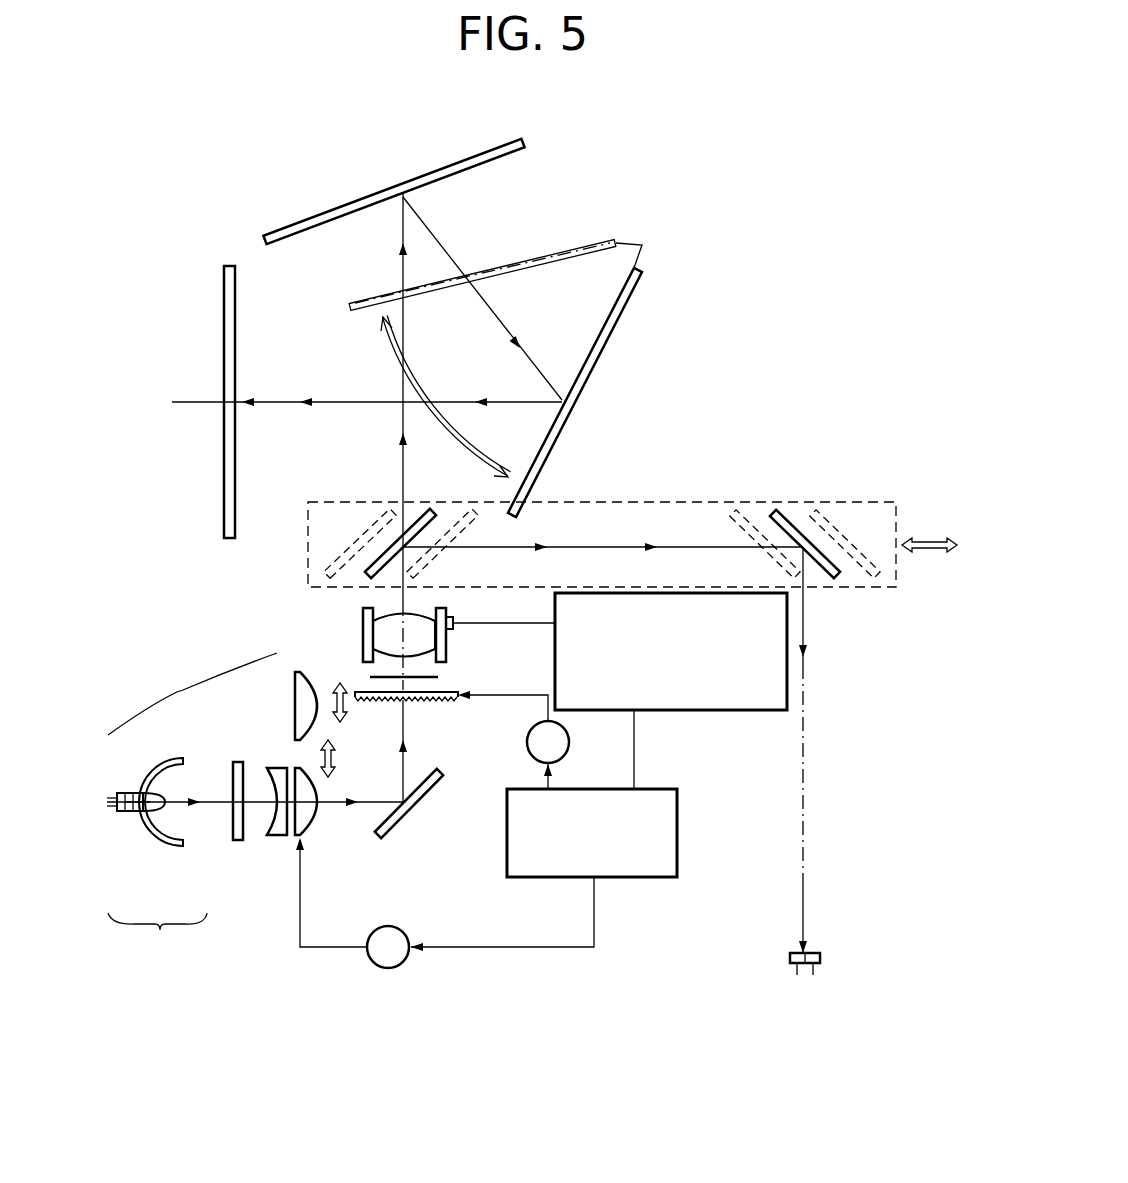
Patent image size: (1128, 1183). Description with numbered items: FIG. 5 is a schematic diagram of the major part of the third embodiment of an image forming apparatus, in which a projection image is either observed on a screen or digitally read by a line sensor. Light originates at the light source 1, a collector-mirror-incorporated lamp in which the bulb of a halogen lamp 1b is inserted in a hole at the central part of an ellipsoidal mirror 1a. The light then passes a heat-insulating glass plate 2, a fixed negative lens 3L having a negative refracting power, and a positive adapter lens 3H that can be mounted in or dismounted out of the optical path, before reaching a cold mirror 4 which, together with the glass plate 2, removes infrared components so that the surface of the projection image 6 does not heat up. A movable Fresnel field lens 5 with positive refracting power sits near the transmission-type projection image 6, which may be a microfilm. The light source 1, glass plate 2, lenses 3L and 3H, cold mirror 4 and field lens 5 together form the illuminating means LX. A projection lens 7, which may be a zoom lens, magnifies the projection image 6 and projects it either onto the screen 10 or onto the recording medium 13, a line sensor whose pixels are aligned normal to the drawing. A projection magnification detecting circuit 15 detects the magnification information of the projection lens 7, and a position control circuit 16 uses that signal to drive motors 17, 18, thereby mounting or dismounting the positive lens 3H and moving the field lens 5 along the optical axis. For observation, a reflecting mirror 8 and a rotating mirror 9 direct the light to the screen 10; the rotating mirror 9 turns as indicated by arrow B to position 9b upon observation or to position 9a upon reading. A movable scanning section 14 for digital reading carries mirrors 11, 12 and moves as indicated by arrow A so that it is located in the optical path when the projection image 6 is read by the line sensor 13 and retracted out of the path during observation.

The light source 1 is at (157, 937).
The ellipsoidal mirror 1a is at (182, 848).
The halogen lamp 1b is at (134, 814).
The heat-insulating glass plate 2 is at (238, 842).
The negative lens 3L is at (278, 838).
The positive lens 3H is at (318, 837).
The cold mirror 4 is at (390, 832).
The field lens 5 is at (436, 702).
The projection image 6 is at (438, 677).
The projection lens 7 is at (366, 633).
The reflecting mirror 8 is at (505, 144).
The rotating mirror 9 is at (628, 308).
The position of rotating mirror upon reading 9a is at (592, 243).
The position of rotating mirror upon observation 9b is at (644, 252).
The screen 10 is at (222, 282).
The mirror for digital reading 11 is at (432, 511).
The mirror for digital reading 12 is at (775, 511).
The recording medium 13 is at (820, 958).
The scanning section 14 is at (863, 500).
The projection magnification detecting circuit 15 is at (672, 712).
The position control circuit 16 is at (677, 820).
The driving motor 17 is at (388, 968).
The driving motor 18 is at (569, 742).
The arrow indicating movement of scanning section A is at (930, 554).
The arrow indicating rotation of rotating mirror B is at (440, 430).
The illuminating means LX is at (192, 694).